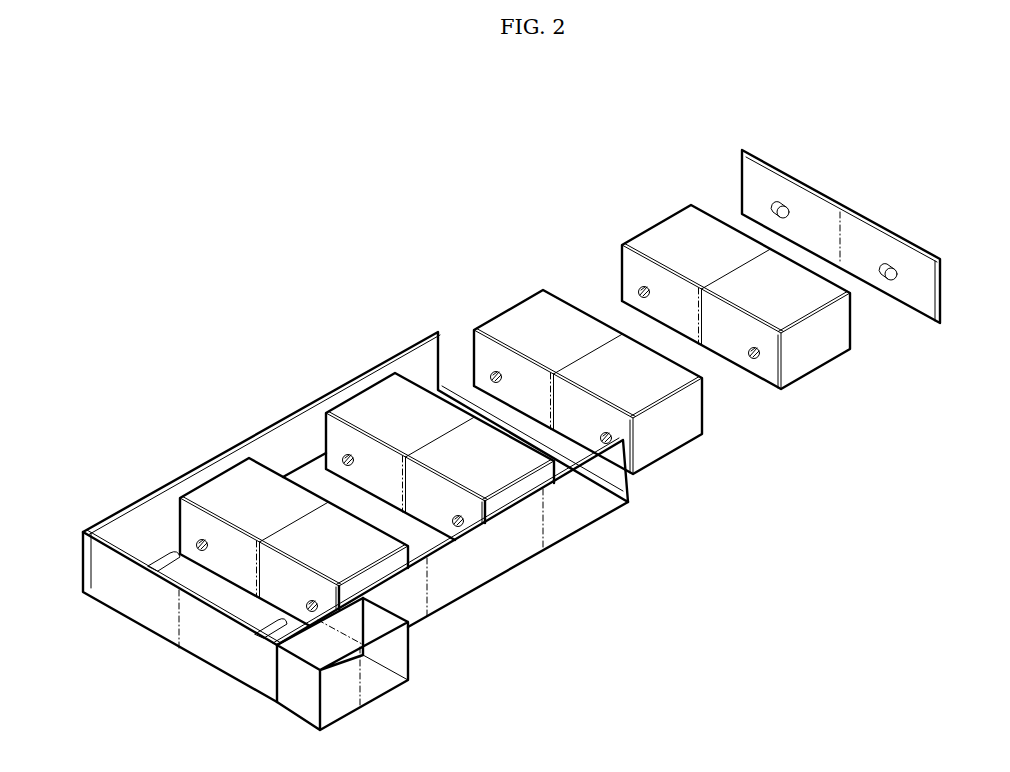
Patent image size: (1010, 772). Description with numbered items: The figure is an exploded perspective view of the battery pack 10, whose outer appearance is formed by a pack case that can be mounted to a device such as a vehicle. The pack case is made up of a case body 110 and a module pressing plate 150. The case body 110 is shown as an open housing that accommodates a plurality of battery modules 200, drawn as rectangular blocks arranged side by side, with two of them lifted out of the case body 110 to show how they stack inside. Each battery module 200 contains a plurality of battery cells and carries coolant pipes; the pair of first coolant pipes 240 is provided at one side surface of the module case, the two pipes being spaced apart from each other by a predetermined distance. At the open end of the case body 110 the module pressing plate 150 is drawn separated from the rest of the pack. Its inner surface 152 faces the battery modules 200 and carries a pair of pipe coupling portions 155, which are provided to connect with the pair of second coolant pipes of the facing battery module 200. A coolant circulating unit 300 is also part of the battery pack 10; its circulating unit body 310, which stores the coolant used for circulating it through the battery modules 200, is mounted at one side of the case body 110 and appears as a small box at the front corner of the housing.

The battery pack 10 is at (388, 148).
The case body 110 is at (513, 552).
The module pressing plate 150 is at (871, 236).
The inner surface 152 is at (867, 242).
The pipe coupling portion 155 is at (898, 266).
The battery module 200 is at (515, 415).
The first coolant pipes 240 is at (342, 460).
The coolant circulating unit 300 is at (344, 685).
The circulating unit body 310 is at (302, 712).